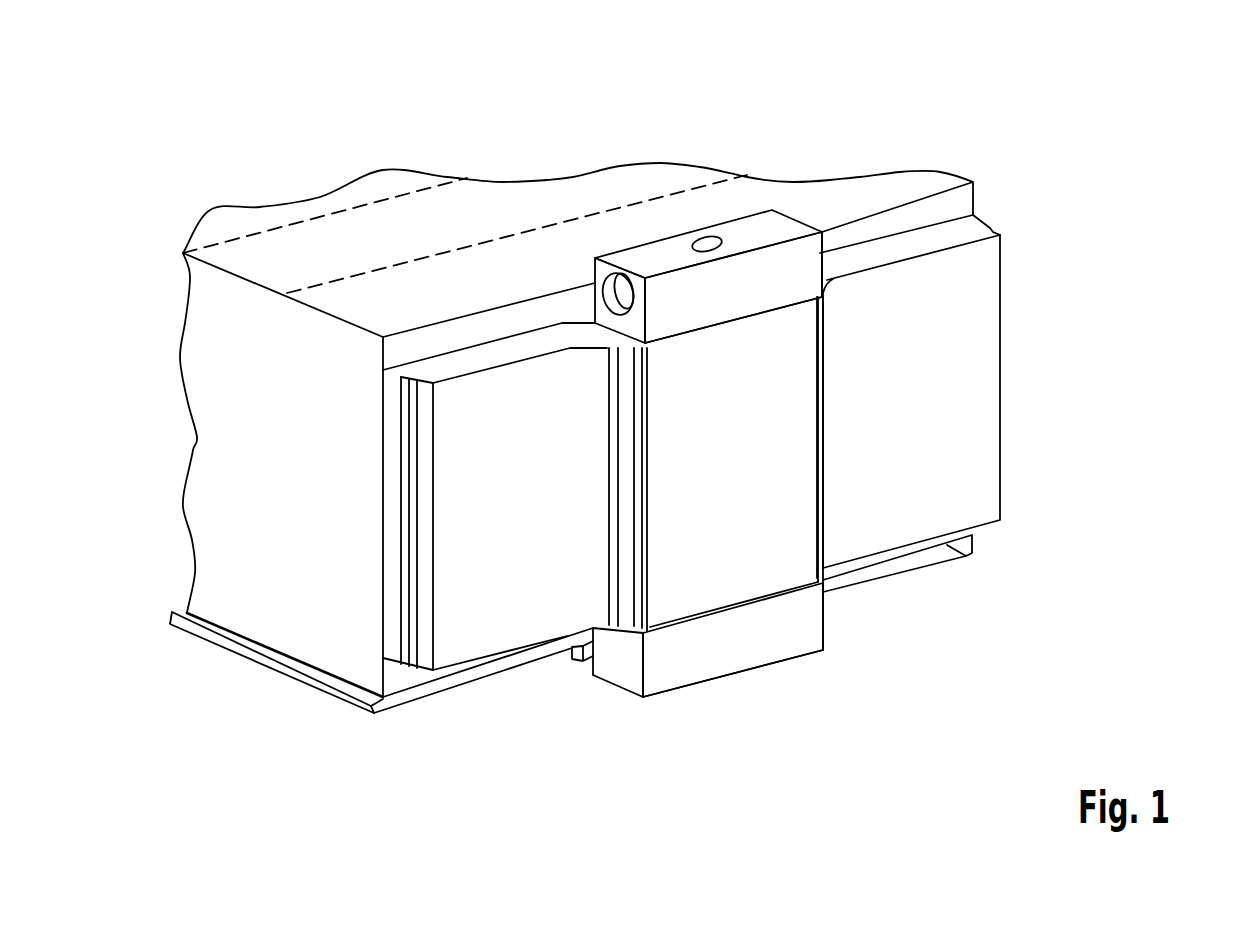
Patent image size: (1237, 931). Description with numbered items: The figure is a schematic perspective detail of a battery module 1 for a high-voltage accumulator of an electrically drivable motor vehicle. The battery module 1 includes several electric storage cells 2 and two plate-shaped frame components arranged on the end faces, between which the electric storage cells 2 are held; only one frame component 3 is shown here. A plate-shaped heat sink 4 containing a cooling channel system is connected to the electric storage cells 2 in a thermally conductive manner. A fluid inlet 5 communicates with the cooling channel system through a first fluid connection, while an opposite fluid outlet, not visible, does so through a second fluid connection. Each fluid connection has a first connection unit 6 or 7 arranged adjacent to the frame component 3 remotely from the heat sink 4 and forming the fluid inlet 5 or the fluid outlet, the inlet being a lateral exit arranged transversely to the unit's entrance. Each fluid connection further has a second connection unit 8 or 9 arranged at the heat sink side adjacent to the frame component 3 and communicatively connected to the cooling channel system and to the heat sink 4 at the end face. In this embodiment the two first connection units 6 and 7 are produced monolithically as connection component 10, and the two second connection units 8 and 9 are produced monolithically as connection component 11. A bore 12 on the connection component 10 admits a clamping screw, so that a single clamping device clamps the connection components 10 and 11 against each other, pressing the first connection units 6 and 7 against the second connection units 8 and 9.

The battery module 1 is at (353, 131).
The electric storage cells 2 is at (452, 222).
The plate-shaped frame component 3 is at (500, 625).
The plate-shaped heat sink 4 is at (288, 667).
The fluid inlet 5 is at (612, 293).
The first connection unit 6 is at (660, 300).
The first connection unit 7 is at (798, 263).
The second connection unit 8 is at (662, 670).
The second connection unit 9 is at (790, 632).
The connection component 10 is at (752, 212).
The connection component 11 is at (721, 680).
The bore 12 is at (708, 246).